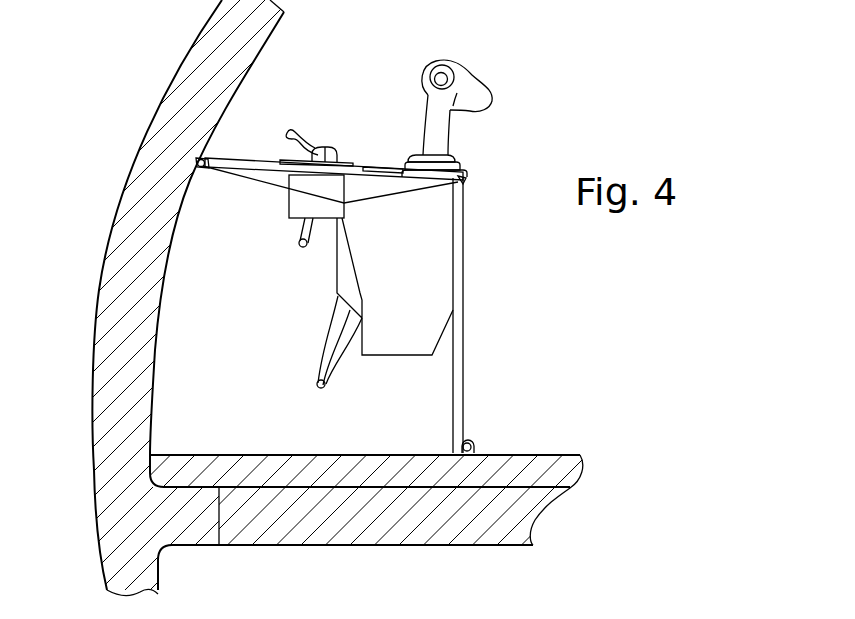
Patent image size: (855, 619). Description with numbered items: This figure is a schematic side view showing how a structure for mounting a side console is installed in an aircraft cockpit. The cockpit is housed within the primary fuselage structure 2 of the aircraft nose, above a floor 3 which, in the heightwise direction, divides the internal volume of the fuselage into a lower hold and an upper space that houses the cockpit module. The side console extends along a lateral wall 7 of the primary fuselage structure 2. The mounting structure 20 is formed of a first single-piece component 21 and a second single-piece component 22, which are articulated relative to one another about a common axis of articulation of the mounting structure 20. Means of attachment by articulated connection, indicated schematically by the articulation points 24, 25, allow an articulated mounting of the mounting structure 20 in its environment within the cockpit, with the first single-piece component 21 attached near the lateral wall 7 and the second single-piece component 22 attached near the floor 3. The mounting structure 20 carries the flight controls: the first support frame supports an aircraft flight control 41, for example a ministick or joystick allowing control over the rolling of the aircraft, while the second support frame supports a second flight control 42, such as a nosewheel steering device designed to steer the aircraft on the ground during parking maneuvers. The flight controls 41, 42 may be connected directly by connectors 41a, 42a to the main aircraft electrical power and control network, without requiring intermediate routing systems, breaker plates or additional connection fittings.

The primary fuselage structure 2 is at (427, 309).
The floor 3 is at (484, 474).
The lateral wall 7 is at (98, 300).
The mounting structure 20 is at (373, 238).
The first single-piece component 21 is at (226, 160).
The second single-piece component 22 is at (463, 338).
The articulation point 24 is at (203, 180).
The articulation point 25 is at (487, 439).
The aircraft flight control 41 is at (456, 72).
The connector 41a is at (318, 380).
The second flight control 42 is at (322, 147).
The connector 42a is at (303, 250).